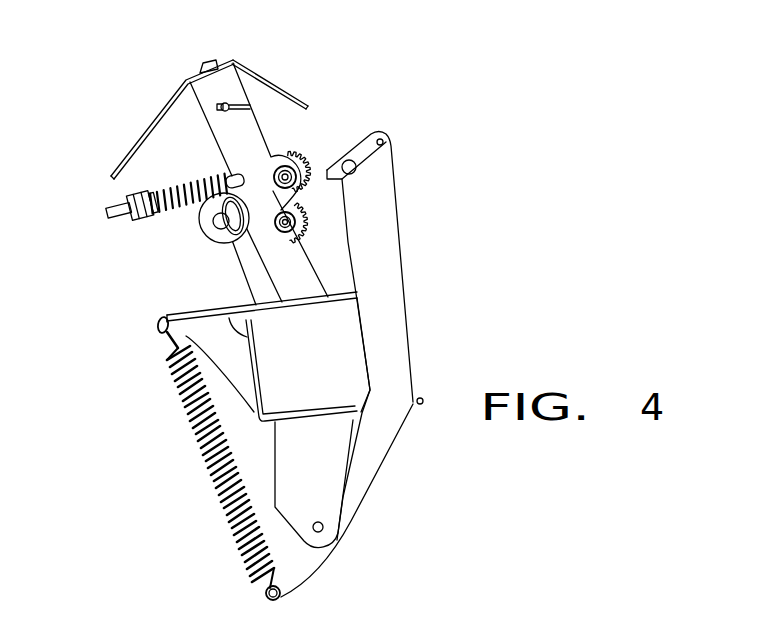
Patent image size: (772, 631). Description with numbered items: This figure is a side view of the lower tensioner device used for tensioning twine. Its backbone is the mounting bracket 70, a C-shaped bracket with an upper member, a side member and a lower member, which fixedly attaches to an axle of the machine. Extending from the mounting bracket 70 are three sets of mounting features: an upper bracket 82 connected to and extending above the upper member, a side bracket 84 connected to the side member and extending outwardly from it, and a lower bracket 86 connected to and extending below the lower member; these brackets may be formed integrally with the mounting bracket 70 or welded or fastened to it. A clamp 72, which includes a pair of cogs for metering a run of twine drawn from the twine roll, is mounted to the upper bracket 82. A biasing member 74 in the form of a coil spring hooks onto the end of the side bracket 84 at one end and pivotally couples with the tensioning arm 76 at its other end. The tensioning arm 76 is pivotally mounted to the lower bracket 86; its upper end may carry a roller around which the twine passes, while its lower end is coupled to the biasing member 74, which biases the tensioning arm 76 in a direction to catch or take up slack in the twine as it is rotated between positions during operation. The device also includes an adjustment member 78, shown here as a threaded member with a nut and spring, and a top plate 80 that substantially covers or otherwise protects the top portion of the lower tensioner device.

The mounting bracket 70 is at (194, 313).
The clamp 72 is at (313, 139).
The biasing member 74 is at (221, 490).
The tensioning arm 76 is at (392, 217).
The adjustment member 78 is at (152, 184).
The top plate 80 is at (245, 62).
The upper bracket 82 is at (224, 126).
The side bracket 84 is at (157, 328).
The lower bracket 86 is at (330, 492).